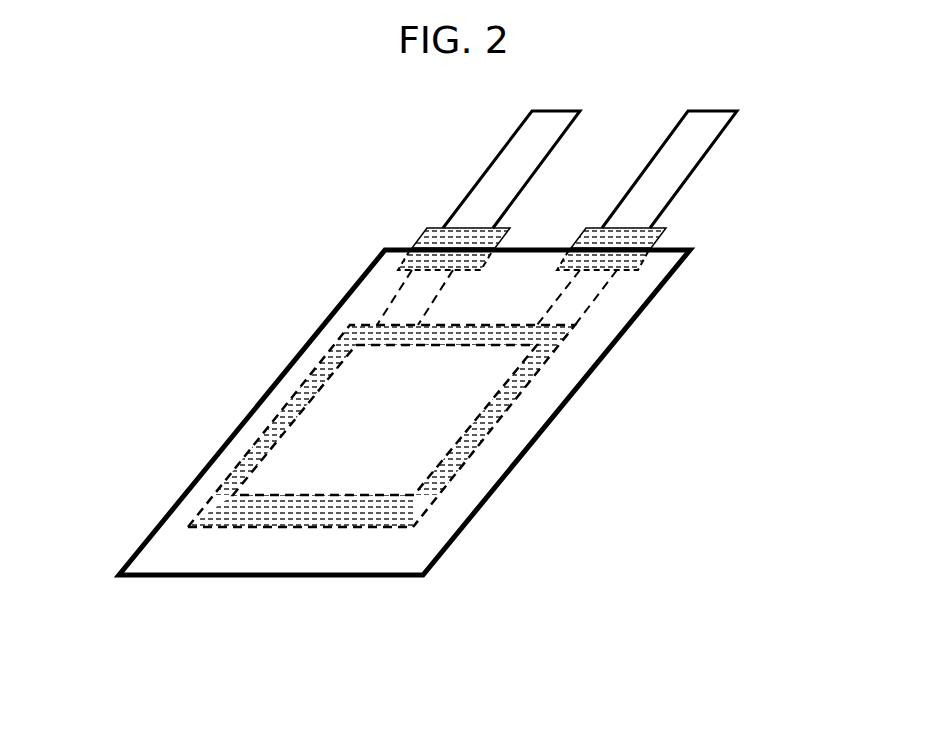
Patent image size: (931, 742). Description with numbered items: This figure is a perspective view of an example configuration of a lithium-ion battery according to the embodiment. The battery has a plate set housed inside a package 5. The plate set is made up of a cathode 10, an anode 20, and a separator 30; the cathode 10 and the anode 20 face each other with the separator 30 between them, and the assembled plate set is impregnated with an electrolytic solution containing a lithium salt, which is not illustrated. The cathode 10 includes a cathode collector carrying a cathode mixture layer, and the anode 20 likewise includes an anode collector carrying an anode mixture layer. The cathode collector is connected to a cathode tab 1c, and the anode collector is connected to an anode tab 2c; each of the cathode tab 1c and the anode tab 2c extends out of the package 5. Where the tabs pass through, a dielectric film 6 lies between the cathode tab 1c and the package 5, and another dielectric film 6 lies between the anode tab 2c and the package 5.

The package 5 is at (215, 452).
The cathode tab 1c is at (502, 152).
The anode tab 2c is at (703, 160).
The dielectric film 6 is at (421, 238).
The cathode 10 is at (343, 410).
The anode 20 is at (500, 425).
The separator 30 is at (337, 532).